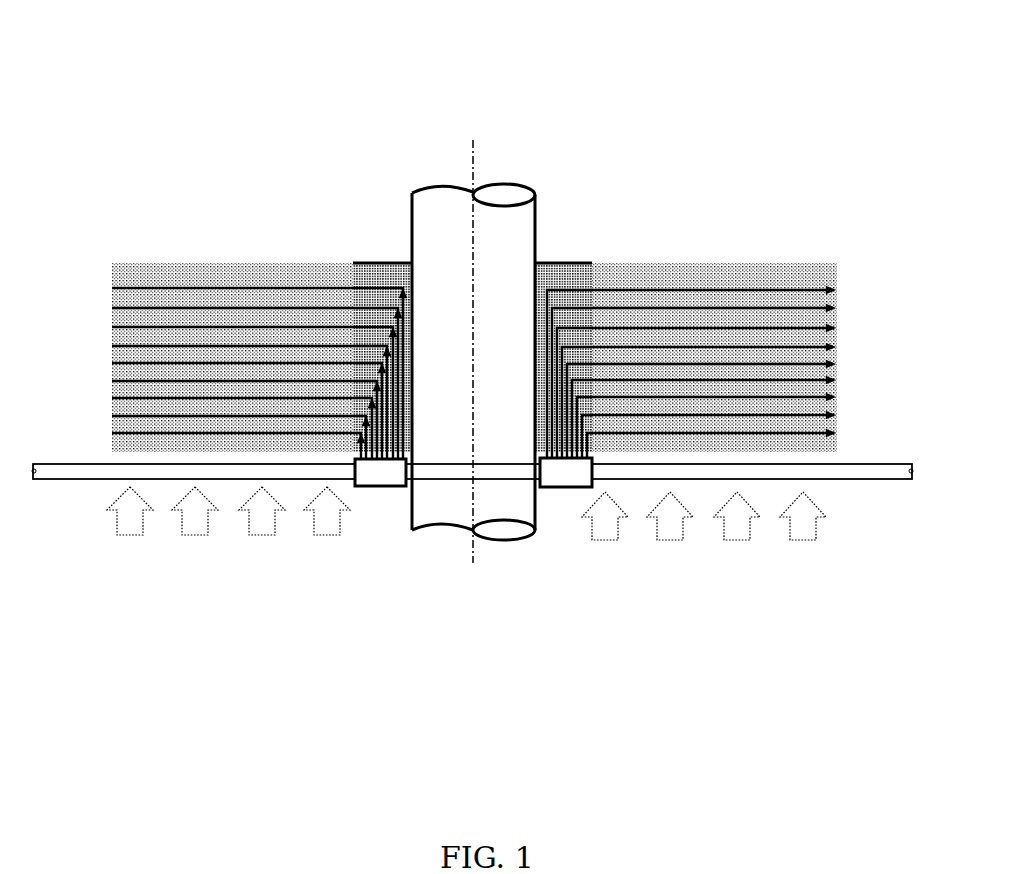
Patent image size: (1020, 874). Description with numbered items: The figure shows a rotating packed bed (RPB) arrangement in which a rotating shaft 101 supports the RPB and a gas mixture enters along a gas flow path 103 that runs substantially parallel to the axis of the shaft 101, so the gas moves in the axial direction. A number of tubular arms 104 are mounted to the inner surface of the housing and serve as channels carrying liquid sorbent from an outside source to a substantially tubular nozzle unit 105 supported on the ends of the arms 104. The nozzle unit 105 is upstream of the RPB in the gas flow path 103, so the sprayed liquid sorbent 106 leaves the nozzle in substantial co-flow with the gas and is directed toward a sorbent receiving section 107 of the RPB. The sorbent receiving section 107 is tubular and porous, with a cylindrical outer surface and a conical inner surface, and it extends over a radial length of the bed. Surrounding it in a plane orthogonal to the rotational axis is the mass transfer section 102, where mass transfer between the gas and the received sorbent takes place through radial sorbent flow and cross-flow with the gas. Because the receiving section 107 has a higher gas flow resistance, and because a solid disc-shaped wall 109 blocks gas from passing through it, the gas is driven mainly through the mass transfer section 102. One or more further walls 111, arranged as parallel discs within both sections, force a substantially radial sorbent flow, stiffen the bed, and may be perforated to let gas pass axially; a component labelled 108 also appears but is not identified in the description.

The rotating shaft 101 is at (430, 248).
The mass transfer section 102 is at (243, 297).
The gas flow path 103 is at (323, 527).
The tubular arms 104 is at (110, 471).
The nozzle unit 105 is at (387, 473).
The sprayed liquid sorbent 106 is at (555, 440).
The sorbent receiving section 107 is at (375, 280).
The second thermal contact layer 108 is at (548, 290).
The solid wall 109 is at (583, 262).
The further walls 111 is at (705, 288).